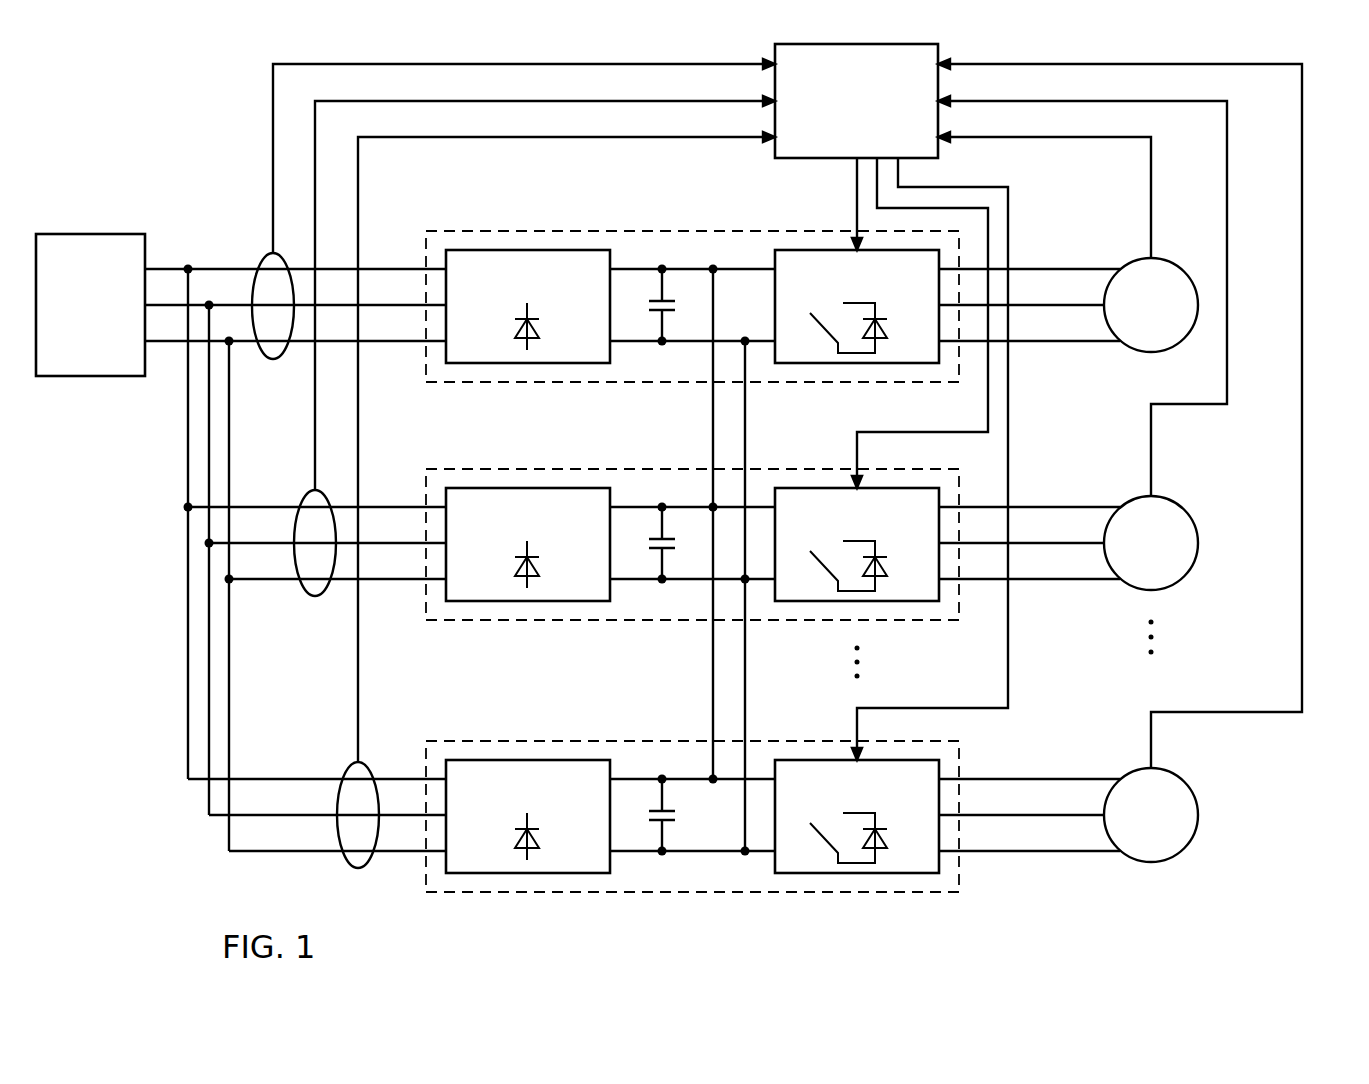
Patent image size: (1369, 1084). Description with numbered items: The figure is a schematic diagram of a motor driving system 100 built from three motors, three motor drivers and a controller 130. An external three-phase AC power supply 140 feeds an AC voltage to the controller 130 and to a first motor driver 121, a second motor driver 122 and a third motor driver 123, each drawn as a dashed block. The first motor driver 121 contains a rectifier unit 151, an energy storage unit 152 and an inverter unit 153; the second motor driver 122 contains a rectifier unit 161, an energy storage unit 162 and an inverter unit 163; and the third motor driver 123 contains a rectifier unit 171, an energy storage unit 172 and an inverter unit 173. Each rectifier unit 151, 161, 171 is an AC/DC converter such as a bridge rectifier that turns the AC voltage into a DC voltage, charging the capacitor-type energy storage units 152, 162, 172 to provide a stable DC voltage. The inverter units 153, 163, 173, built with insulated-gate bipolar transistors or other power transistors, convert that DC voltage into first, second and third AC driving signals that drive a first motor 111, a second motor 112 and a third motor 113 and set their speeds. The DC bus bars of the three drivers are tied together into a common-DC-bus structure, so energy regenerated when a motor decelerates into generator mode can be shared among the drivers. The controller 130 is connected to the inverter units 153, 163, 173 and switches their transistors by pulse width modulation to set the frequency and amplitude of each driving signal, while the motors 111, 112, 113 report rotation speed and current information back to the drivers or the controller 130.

The motor driving system 100 is at (104, 126).
The power supply 140 is at (68, 353).
The controller 130 is at (835, 133).
The first motor 111 is at (1198, 305).
The second motor 112 is at (1236, 543).
The third motor 113 is at (1192, 815).
The first motor driver 121 is at (603, 229).
The second motor driver 122 is at (692, 516).
The third motor driver 123 is at (692, 787).
The rectifier unit 151 is at (527, 363).
The energy storage unit 152 is at (656, 313).
The inverter unit 153 is at (805, 363).
The rectifier unit 161 is at (528, 585).
The energy storage unit 162 is at (644, 593).
The inverter unit 163 is at (857, 585).
The rectifier unit 171 is at (528, 857).
The energy storage unit 172 is at (644, 865).
The inverter unit 173 is at (857, 857).